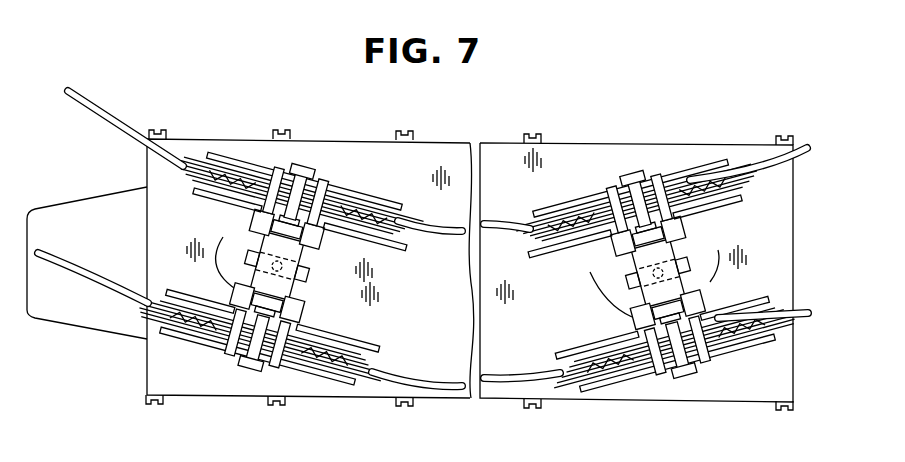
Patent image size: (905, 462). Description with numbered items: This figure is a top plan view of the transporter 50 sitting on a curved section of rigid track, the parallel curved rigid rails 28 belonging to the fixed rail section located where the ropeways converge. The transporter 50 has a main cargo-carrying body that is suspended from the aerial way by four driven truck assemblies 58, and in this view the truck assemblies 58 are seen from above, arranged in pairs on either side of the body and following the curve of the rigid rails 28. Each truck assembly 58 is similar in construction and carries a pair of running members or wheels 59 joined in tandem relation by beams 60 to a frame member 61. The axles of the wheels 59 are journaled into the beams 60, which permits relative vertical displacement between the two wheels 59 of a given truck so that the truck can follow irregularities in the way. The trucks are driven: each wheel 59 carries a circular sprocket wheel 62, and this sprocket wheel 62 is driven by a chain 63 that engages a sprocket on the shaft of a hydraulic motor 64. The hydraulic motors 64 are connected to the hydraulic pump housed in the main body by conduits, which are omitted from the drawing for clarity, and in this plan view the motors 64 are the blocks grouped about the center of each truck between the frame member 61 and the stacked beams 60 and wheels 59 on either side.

The rigid rails 28 is at (100, 106).
The transporter 50 is at (223, 401).
The truck assemblies 58 is at (442, 266).
The wheels 59 is at (193, 155).
The beams 60 is at (243, 162).
The frame member 61 is at (302, 206).
The sprocket wheel 62 is at (192, 183).
The chain 63 is at (173, 171).
The hydraulic motor 64 is at (259, 221).